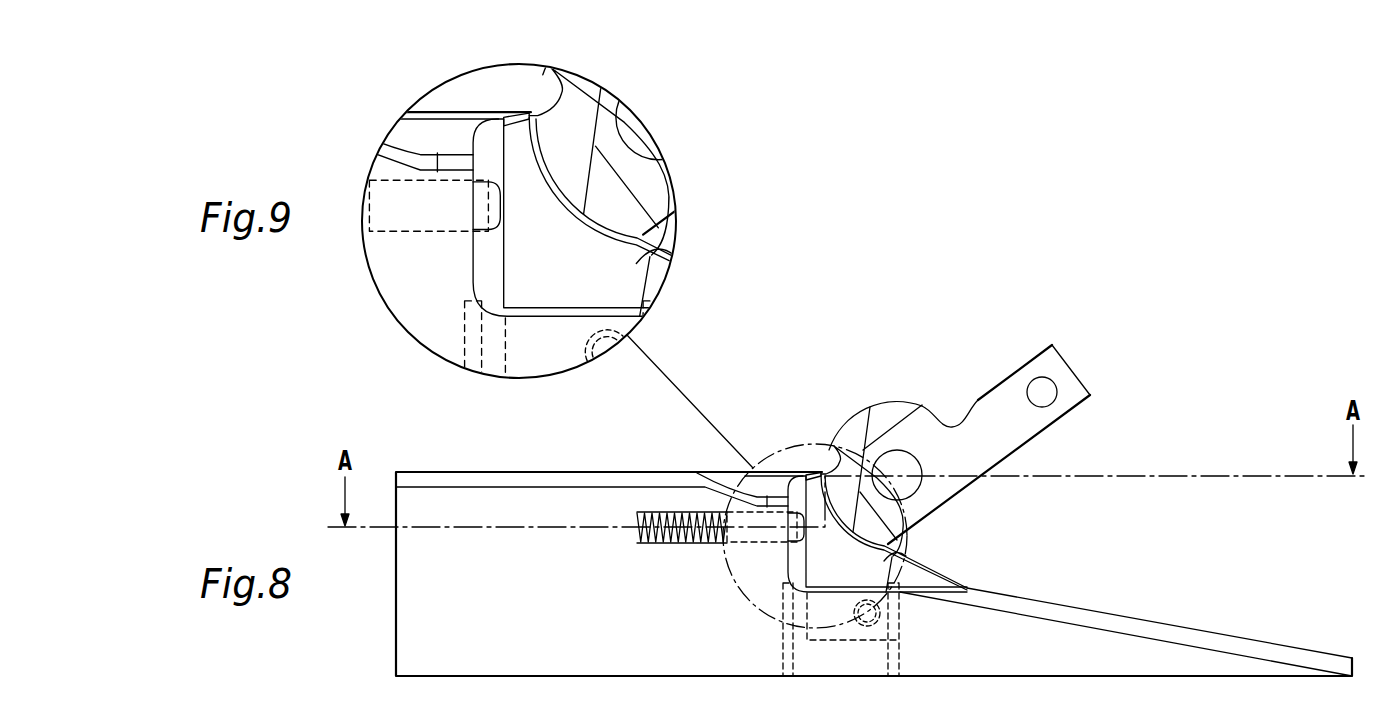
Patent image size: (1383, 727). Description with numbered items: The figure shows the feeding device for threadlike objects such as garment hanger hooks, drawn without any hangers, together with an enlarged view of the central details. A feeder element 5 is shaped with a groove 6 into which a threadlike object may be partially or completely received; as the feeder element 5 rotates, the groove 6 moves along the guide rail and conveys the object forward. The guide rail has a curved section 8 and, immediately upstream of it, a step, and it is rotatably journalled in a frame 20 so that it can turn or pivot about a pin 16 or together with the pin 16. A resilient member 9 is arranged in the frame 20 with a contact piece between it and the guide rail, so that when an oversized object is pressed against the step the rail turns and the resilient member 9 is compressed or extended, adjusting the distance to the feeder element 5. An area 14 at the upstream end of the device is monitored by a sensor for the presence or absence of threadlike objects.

The feeder element 5 is at (1000, 407).
The groove 6 is at (833, 462).
The curved section 8 is at (894, 533).
The resilient member 9 is at (668, 545).
The area 14 is at (792, 478).
The pin 16 is at (880, 620).
The frame 20 is at (493, 645).